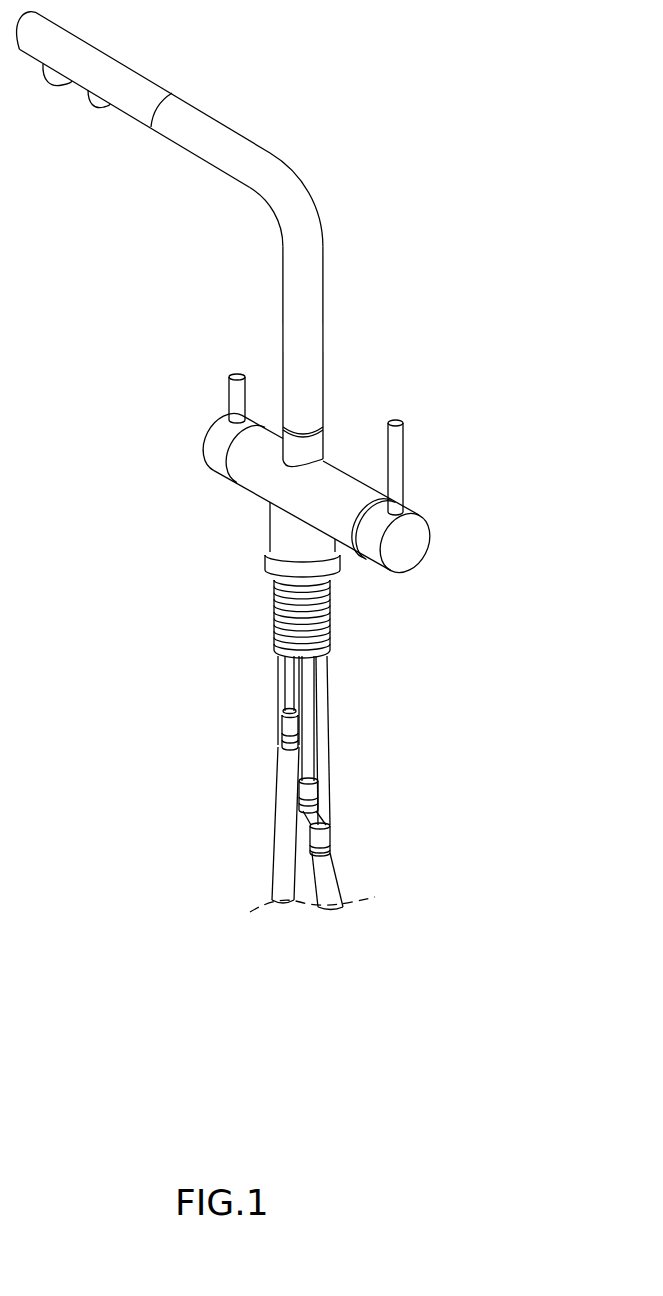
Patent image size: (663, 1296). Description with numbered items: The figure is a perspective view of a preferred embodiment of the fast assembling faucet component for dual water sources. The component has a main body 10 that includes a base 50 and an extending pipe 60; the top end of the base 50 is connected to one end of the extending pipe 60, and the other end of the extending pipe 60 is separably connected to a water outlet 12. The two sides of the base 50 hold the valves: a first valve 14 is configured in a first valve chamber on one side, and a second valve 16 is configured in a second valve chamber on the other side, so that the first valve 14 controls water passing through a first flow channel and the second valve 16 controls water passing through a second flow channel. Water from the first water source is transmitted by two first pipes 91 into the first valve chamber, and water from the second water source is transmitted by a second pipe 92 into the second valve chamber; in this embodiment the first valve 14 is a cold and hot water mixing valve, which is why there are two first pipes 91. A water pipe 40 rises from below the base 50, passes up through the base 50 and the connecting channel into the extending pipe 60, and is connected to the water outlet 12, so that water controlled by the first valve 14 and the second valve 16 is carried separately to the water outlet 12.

The main body 10 is at (343, 253).
The water outlet 12 is at (107, 53).
The first valve 14 is at (405, 481).
The second valve 16 is at (228, 404).
The water pipe 40 is at (337, 863).
The base 50 is at (343, 467).
The extending pipe 60 is at (272, 157).
The first pipe 91 is at (328, 720).
The second pipe 92 is at (283, 685).